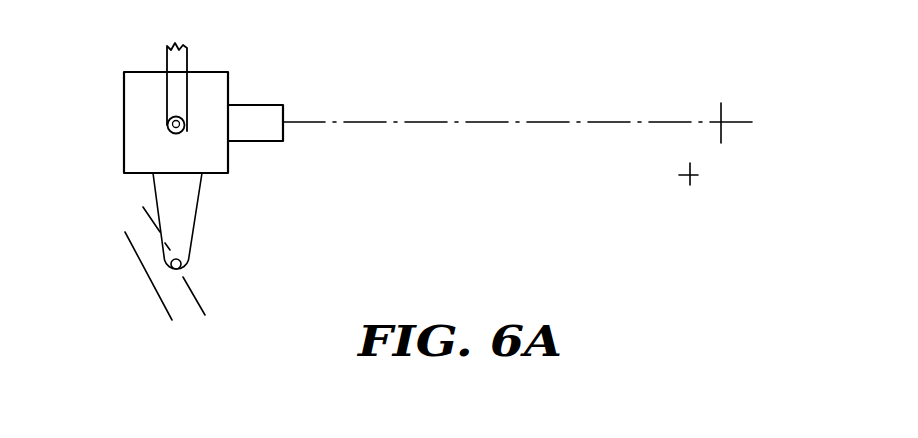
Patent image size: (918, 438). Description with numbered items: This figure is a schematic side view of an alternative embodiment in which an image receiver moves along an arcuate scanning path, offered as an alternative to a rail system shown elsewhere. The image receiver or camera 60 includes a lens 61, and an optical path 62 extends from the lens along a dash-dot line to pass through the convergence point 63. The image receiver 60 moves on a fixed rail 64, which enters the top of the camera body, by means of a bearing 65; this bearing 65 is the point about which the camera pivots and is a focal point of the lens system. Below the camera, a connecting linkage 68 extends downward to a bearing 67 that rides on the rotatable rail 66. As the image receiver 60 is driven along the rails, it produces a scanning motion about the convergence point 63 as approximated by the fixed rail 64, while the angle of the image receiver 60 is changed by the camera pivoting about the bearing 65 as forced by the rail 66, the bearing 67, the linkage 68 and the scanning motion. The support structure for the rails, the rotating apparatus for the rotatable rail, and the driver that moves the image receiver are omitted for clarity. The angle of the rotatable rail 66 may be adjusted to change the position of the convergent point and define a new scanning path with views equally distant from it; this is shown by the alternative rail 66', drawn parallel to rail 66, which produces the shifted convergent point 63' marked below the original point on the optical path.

The image receiver 60 is at (230, 82).
The lens 61 is at (262, 113).
The optical path 62 is at (443, 120).
The convergence point 63 is at (687, 110).
The convergent point 63' is at (660, 180).
The fixed rail 64 is at (178, 58).
The bearing 65 is at (170, 128).
The rotatable rail 66 is at (202, 261).
The rotatable rail (adjusted position) 66' is at (144, 288).
The bearing 67 is at (182, 258).
The connecting linkage 68 is at (190, 213).